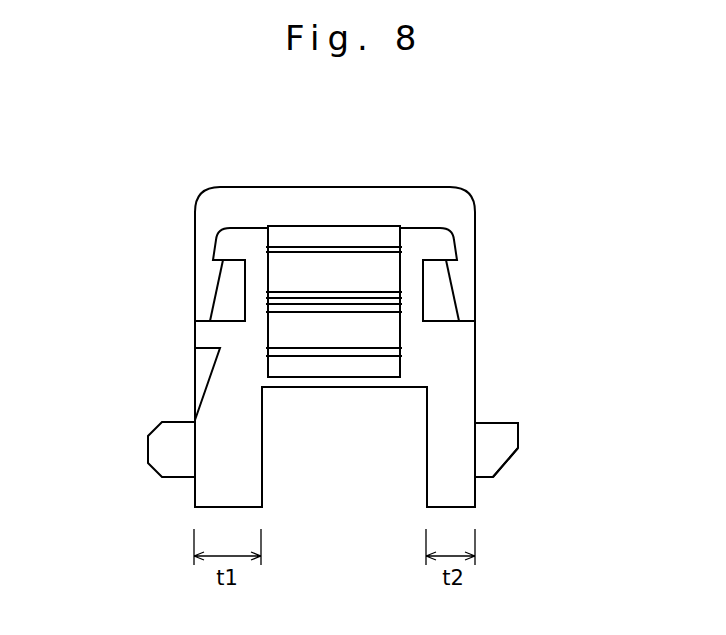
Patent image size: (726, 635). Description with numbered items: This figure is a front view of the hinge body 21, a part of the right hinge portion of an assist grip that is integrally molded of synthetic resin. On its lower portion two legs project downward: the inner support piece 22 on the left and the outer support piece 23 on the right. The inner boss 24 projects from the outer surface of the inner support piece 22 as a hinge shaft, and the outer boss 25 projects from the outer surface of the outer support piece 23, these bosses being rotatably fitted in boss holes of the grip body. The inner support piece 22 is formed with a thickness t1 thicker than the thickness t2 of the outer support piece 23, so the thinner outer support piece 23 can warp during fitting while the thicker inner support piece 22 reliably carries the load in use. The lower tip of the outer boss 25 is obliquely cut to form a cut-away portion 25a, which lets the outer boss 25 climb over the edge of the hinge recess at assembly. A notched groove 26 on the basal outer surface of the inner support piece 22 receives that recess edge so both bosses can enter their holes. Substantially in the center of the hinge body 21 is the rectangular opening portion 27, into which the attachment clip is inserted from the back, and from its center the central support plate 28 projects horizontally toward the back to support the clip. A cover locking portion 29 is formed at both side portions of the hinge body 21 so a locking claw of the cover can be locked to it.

The hinge body 21 is at (167, 222).
The inner support piece 22 is at (252, 480).
The outer support piece 23 is at (438, 478).
The inner boss 24 is at (160, 450).
The outer boss 25 is at (510, 437).
The cut-away portion 25a is at (503, 467).
The notched groove 26 is at (209, 375).
The rectangular opening portion 27 is at (338, 268).
The central support plate 28 is at (297, 303).
The cover locking portion 29 is at (217, 288).